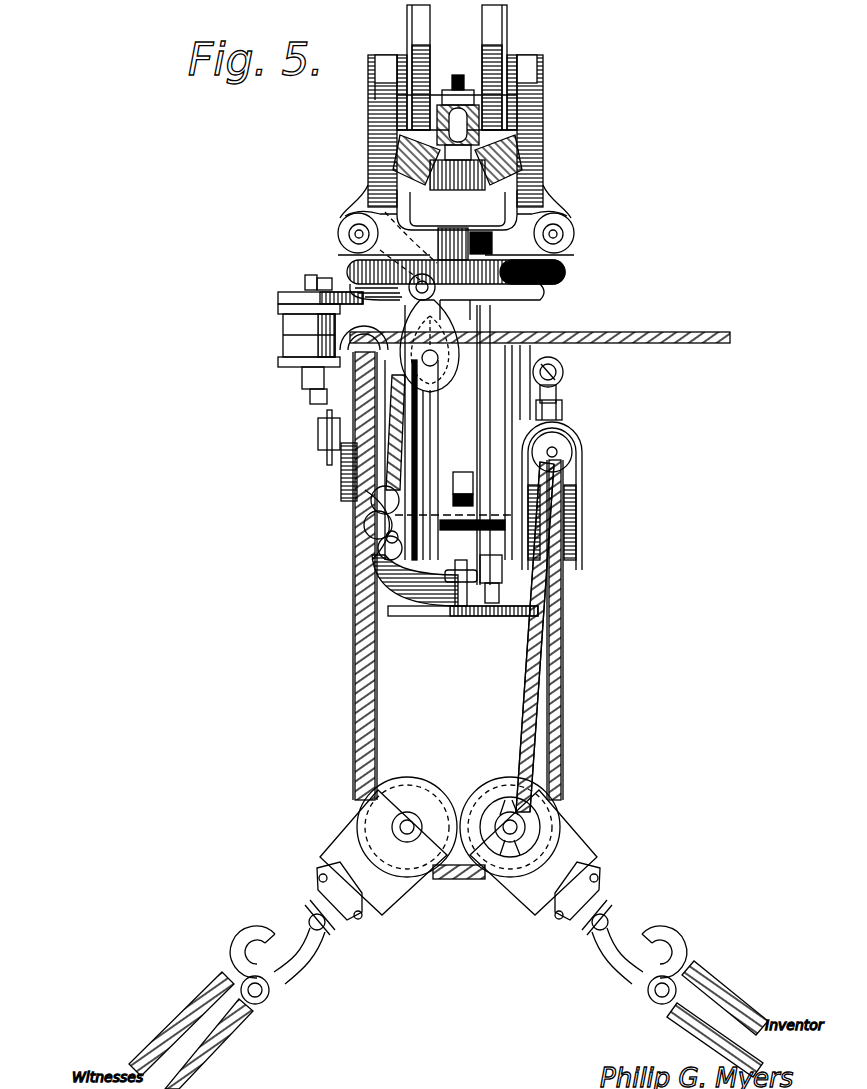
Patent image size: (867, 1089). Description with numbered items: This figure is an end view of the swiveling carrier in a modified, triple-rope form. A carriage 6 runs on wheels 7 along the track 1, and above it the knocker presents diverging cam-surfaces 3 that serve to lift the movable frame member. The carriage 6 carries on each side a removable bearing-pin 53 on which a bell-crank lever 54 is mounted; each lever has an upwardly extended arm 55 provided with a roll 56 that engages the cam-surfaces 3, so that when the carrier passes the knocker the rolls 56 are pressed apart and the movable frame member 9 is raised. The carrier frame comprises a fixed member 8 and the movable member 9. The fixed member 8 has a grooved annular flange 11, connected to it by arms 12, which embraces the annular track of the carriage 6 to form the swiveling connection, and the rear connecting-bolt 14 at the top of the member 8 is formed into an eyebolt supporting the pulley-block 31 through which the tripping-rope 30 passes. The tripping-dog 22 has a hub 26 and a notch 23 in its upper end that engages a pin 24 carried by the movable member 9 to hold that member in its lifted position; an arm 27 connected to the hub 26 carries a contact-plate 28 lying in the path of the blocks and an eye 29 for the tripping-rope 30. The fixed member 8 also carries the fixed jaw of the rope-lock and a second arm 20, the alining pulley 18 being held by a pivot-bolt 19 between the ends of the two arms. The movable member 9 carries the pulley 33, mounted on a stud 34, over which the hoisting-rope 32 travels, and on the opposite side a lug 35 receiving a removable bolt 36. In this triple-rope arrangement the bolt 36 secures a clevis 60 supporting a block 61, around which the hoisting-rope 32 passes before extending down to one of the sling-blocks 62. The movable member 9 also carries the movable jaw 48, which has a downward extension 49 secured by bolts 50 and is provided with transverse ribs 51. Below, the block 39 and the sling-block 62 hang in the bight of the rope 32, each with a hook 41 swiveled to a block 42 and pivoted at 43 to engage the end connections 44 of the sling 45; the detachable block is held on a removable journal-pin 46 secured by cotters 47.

The track 1 is at (400, 128).
The cam-surfaces 3 is at (456, 117).
The carriage 6 is at (368, 108).
The wheels 7 is at (487, 20).
The fixed frame member 8 is at (499, 592).
The movable frame member 9 is at (498, 418).
The grooved annular flange 11 is at (566, 274).
The arms 12 is at (542, 300).
The rear connecting-bolt 14 is at (420, 285).
The alining pulley 18 is at (283, 336).
The pivot-bolt 19 is at (311, 275).
The second arm 20 is at (300, 292).
The tripping-dog 22 is at (462, 585).
The notch 23 is at (475, 476).
The pin 24 is at (584, 512).
The hub 26 is at (496, 565).
The arm 27 is at (385, 572).
The contact-plate 28 is at (418, 616).
The eye 29 is at (372, 538).
The tripping-rope 30 is at (668, 327).
The pulley-block 31 is at (448, 388).
The hoisting-rope 32 is at (353, 772).
The pulley 33 is at (343, 505).
The stud 34 is at (318, 438).
The lug 35 is at (566, 366).
The removable bolt 36 is at (558, 380).
The block 39 is at (383, 895).
The hooks 41 is at (300, 966).
The blocks 42 is at (318, 890).
The pivot 43 is at (326, 928).
The end connections 44 is at (262, 1000).
The sling 45 is at (210, 1056).
The removable journal-pin 46 is at (525, 827).
The cotters 47 is at (500, 812).
The movable jaw 48 is at (280, 310).
The downward extension 49 is at (418, 456).
The bolts 50 is at (386, 558).
The transverse ribs 51 is at (283, 352).
The removable bearing-pin 53 is at (343, 222).
The bell-crank lever 54 is at (338, 236).
The arm 55 is at (368, 195).
The roll 56 is at (372, 152).
The clevis 60 is at (562, 412).
The block 61 is at (582, 482).
The sling-block 62 is at (568, 848).